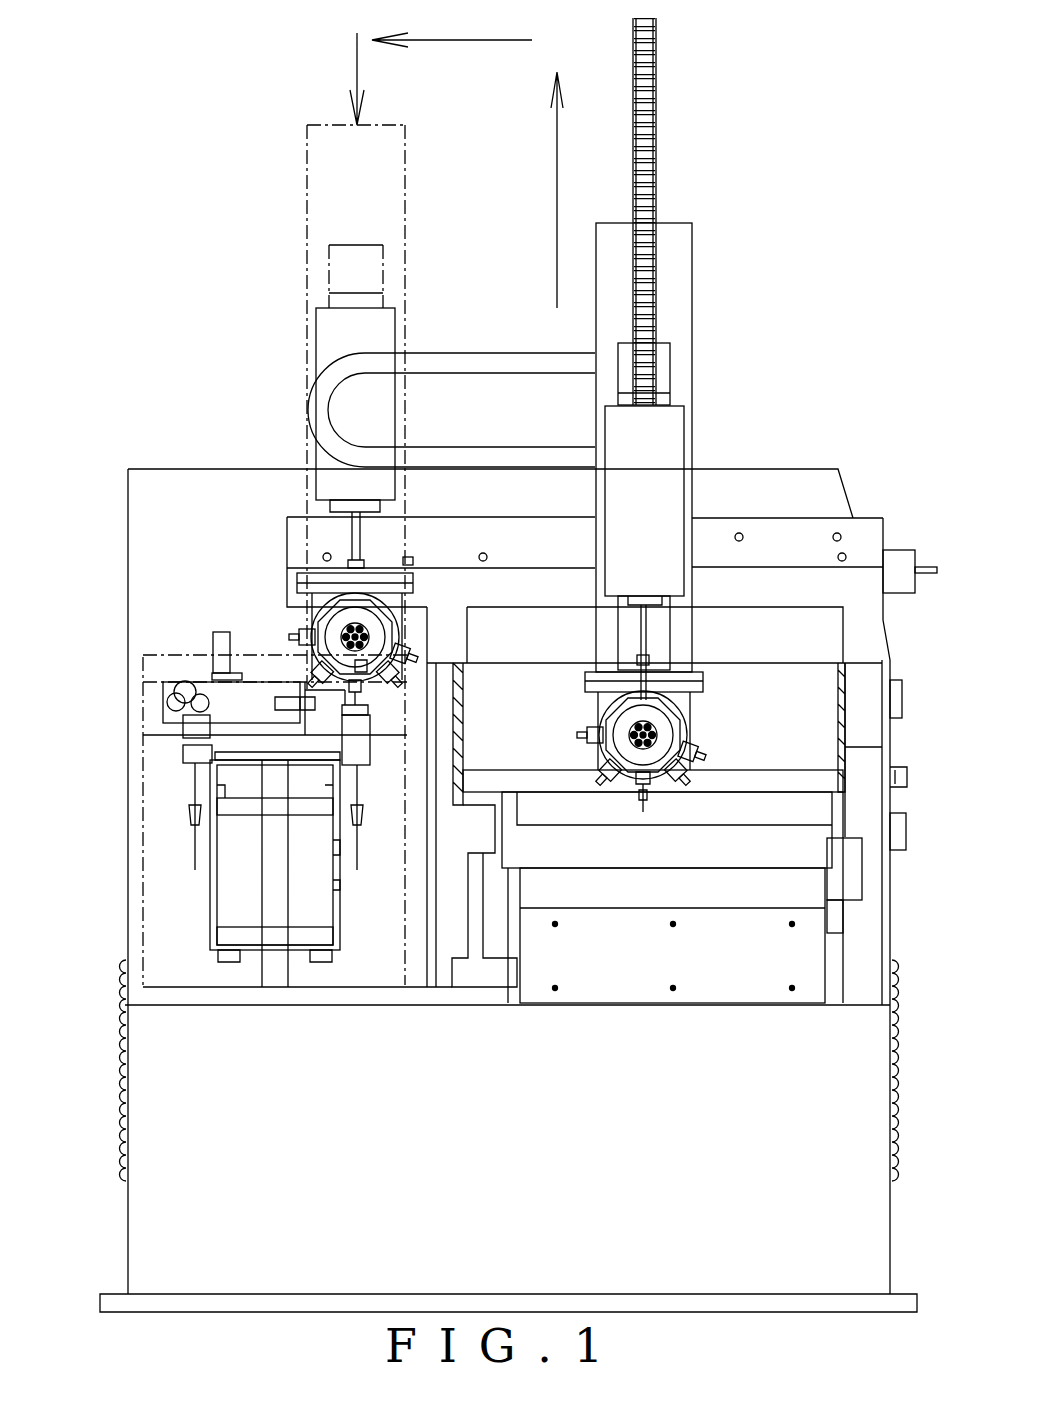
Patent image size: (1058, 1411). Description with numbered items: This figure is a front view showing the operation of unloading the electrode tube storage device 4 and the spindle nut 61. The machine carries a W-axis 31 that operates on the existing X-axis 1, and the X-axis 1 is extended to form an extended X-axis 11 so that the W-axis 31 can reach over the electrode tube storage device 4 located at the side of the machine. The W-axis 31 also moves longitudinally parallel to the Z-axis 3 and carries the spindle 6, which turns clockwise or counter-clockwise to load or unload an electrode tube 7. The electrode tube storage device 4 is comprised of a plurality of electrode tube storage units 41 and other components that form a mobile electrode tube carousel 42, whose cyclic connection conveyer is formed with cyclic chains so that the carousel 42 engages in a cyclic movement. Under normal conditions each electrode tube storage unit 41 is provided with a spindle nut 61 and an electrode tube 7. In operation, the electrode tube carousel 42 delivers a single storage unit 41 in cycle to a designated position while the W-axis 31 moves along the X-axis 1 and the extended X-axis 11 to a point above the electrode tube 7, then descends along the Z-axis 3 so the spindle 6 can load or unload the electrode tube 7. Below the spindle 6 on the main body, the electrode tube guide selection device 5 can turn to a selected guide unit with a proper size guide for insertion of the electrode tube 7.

The X-axis 1 is at (862, 535).
The extended X-axis 11 is at (298, 525).
The Z-axis 3 is at (660, 427).
The W-axis 31 is at (683, 255).
The electrode tube storage device 4 is at (240, 681).
The electrode tube storage unit 41 is at (188, 752).
The electrode tube carousel 42 is at (275, 842).
The electrode tube guide selection device 5 is at (682, 702).
The spindle 6 is at (642, 630).
The spindle nut 61 is at (648, 652).
The electrode tube 7 is at (643, 807).